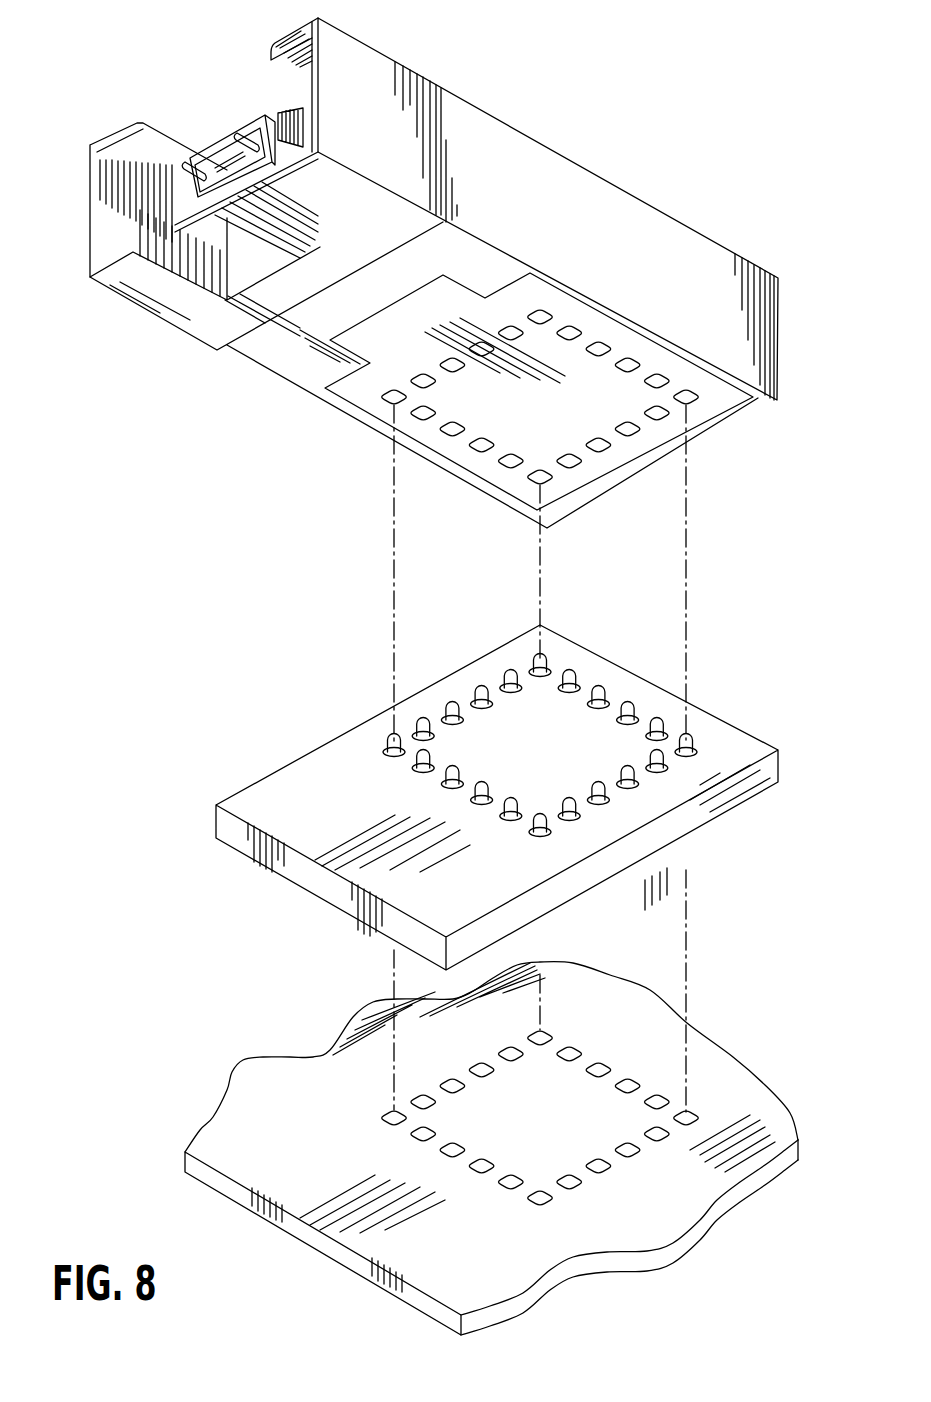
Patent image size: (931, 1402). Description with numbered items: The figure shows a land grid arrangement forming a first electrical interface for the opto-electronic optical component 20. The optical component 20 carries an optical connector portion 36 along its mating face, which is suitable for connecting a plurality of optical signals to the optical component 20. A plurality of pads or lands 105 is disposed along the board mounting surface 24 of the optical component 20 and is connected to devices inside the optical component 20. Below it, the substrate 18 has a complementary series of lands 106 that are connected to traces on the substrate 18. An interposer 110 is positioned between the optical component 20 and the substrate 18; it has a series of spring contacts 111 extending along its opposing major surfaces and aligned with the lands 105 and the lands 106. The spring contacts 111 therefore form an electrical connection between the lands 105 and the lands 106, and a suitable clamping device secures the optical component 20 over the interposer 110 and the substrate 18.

The substrate 18 is at (737, 1052).
The optical component 20 is at (598, 177).
The board mounting surface 24 is at (762, 402).
The optical connector portion 36 is at (222, 132).
The pads or lands 105 is at (690, 398).
The lands 106 is at (660, 1137).
The interposer 110 is at (727, 715).
The spring contacts 111 is at (662, 768).